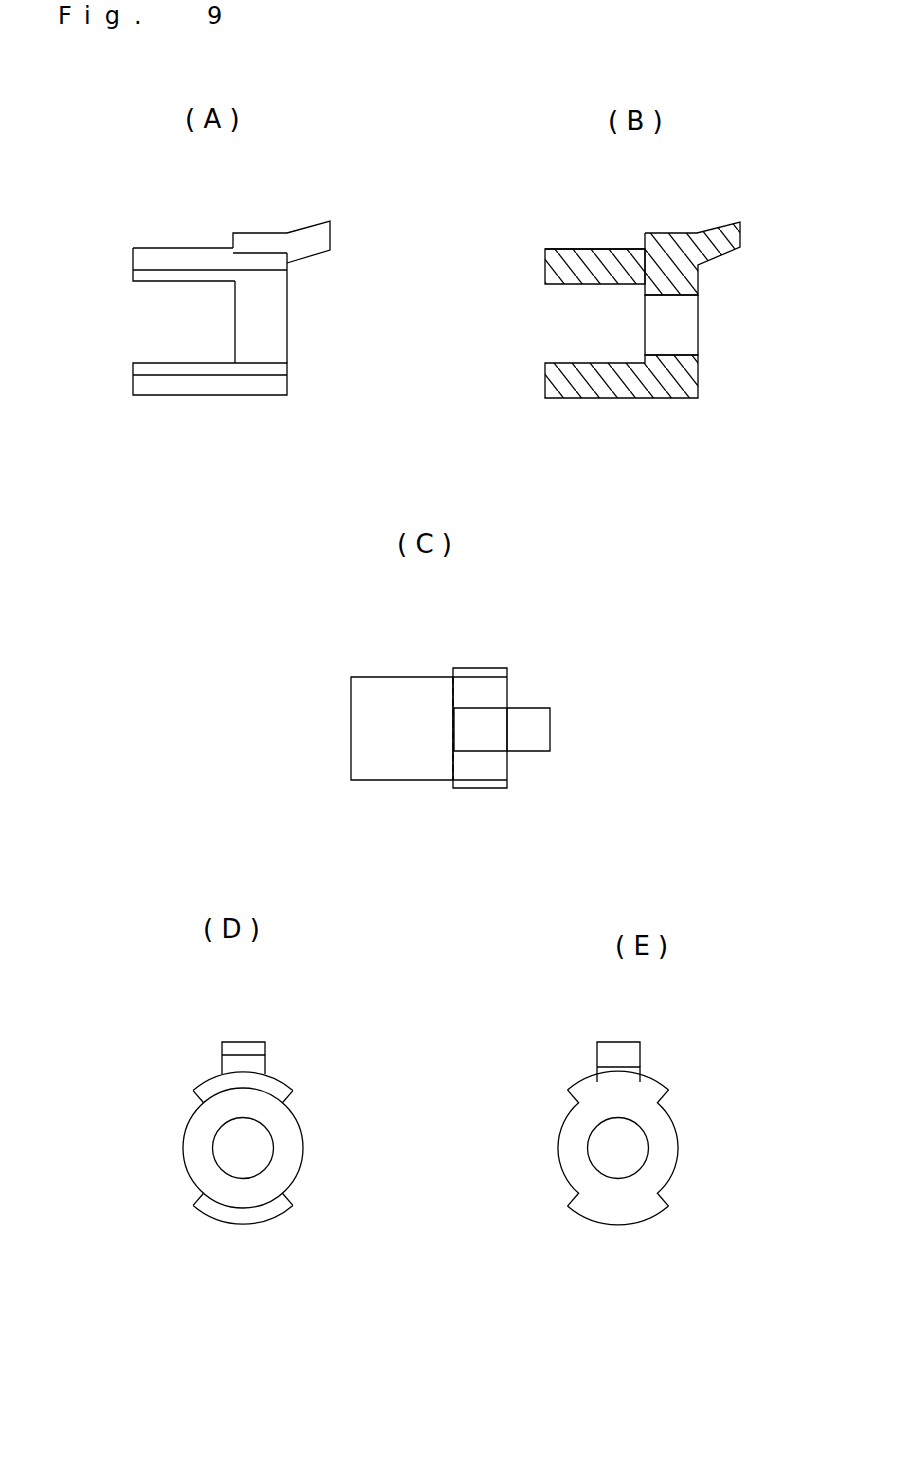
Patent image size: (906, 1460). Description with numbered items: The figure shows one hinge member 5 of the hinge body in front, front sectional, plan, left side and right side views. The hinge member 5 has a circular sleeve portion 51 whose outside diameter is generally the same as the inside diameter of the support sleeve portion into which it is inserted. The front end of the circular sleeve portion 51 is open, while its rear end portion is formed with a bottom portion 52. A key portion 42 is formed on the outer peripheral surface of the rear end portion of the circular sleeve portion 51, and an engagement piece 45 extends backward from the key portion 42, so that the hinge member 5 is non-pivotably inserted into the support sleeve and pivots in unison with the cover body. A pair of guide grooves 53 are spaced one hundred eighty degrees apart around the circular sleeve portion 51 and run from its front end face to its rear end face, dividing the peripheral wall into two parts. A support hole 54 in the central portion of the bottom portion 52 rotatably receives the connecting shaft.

The hinge member 5 is at (424, 714).
The key portion 42 is at (259, 243).
The engagement piece 45 is at (313, 232).
The circular sleeve portion 51 is at (195, 388).
The bottom portion 52 is at (273, 337).
The guide grooves 53 is at (167, 343).
The support hole 54 is at (683, 340).